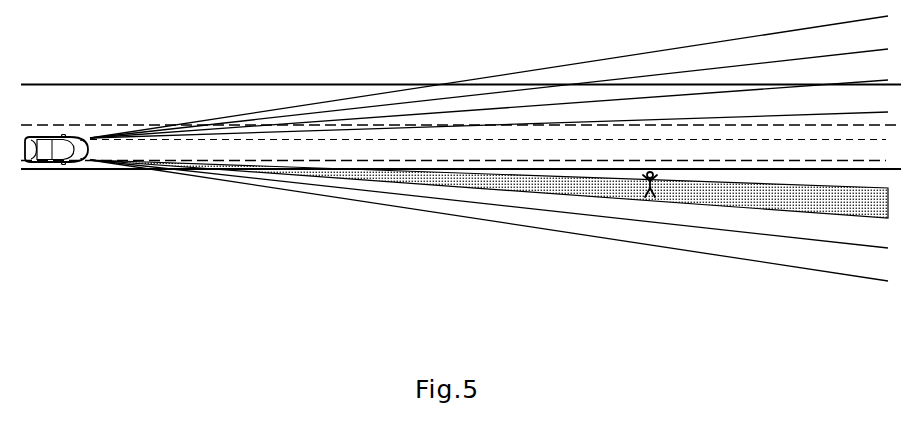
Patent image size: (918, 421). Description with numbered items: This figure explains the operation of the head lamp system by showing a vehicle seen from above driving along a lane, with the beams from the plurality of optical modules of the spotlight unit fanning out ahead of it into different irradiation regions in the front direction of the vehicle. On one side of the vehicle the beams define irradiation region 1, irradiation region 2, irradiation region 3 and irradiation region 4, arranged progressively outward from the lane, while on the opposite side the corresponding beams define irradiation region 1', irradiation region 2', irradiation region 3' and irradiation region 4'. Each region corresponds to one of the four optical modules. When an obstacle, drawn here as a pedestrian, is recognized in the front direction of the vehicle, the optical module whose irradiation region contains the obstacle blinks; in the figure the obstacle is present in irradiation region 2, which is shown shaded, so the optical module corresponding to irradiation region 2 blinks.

The irradiation region 1 is at (461, 171).
The irradiation region 1' is at (489, 123).
The irradiation region 2' is at (489, 109).
The irradiation region 3' is at (489, 93).
The irradiation region 4' is at (489, 77).
The irradiation region 2 is at (489, 189).
The irradiation region 3 is at (489, 204).
The irradiation region 4 is at (489, 220).